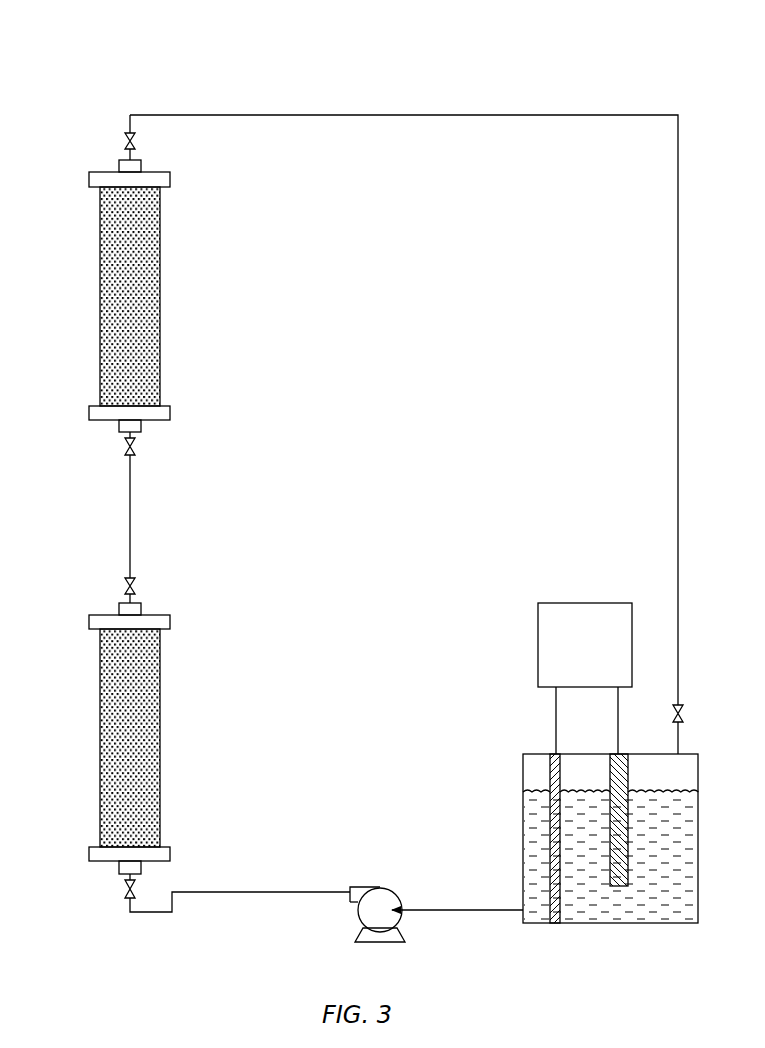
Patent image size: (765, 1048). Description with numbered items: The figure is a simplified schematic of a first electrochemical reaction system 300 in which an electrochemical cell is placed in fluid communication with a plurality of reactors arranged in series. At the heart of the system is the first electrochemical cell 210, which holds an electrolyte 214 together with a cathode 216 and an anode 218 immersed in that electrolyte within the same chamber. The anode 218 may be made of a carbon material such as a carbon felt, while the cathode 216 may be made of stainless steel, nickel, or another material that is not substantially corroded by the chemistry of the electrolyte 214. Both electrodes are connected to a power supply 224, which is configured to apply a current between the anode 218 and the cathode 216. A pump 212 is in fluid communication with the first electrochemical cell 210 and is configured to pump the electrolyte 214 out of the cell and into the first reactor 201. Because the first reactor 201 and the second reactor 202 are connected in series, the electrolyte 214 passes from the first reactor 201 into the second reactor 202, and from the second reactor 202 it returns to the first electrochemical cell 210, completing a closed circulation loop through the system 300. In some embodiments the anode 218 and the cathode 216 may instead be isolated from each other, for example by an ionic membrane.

The first electrochemical reaction system 300 is at (641, 88).
The second reactor 202 is at (90, 346).
The first reactor 201 is at (180, 745).
The pump 212 is at (355, 931).
The first electrochemical cell 210 is at (555, 838).
The electrolyte 214 is at (683, 854).
The cathode 216 is at (630, 886).
The anode 218 is at (553, 908).
The power supply 224 is at (570, 654).